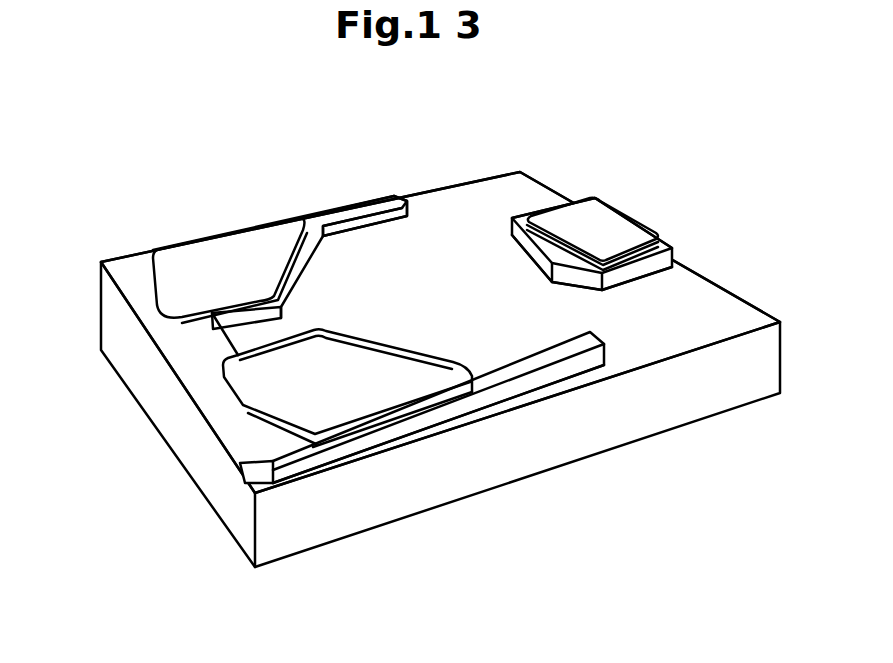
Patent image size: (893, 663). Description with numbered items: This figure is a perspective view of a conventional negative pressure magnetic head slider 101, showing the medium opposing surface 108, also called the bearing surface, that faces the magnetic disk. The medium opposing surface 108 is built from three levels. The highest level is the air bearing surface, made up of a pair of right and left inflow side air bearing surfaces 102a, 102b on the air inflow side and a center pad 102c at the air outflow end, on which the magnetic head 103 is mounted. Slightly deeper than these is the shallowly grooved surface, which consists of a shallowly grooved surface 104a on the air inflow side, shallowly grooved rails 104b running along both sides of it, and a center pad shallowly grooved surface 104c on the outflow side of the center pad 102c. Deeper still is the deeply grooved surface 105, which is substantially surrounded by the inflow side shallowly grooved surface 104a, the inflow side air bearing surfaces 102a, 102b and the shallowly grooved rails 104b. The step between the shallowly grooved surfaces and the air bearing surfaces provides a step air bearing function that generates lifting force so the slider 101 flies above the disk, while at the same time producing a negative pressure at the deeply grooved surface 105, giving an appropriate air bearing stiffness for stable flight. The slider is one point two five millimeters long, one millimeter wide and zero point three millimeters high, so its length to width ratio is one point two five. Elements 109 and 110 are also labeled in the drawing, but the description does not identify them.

The slider 101 is at (682, 403).
The inflow side air bearing surface 102a is at (193, 277).
The inflow side air bearing surface 102b is at (300, 378).
The center pad 102c is at (593, 227).
The magnetic head 103 is at (645, 221).
The shallowly grooved surface 104a is at (181, 343).
The shallowly grooved rail 104b is at (353, 210).
The center pad shallowly grooved surface 104c is at (540, 247).
The deeply grooved surface 105 is at (432, 290).
The medium opposing surface 108 is at (240, 222).
The gap 109 is at (423, 400).
The side edge portion 110 is at (373, 453).